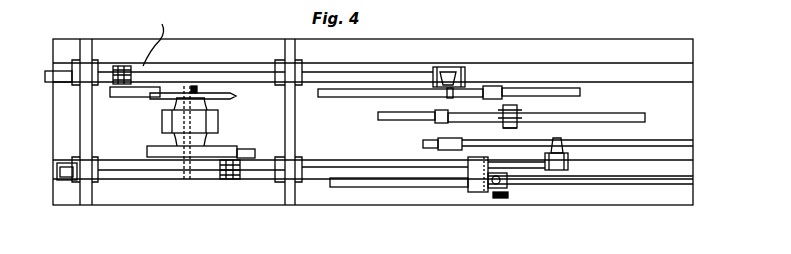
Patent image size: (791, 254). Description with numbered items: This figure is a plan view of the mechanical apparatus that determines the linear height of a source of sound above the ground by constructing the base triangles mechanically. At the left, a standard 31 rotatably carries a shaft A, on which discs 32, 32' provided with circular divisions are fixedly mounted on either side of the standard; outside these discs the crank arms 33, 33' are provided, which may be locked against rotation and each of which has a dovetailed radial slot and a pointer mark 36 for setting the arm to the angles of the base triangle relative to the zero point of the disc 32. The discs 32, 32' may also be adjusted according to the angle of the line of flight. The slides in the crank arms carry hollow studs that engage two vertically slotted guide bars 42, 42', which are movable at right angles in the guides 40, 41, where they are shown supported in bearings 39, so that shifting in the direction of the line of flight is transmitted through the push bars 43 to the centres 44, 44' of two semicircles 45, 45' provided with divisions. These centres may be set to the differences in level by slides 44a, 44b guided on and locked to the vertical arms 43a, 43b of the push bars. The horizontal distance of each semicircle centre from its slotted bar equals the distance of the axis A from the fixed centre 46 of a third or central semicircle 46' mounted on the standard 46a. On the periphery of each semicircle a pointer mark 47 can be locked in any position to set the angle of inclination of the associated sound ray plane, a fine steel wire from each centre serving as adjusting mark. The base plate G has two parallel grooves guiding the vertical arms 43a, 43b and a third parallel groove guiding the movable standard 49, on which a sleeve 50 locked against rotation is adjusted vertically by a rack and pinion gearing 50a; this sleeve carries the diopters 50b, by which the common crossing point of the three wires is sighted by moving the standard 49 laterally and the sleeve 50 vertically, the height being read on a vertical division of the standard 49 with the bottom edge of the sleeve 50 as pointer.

The guide 40 is at (88, 46).
The guide 41 is at (296, 130).
The bearing 39 is at (123, 66).
The guide bar 42' is at (161, 33).
The base plate G is at (201, 45).
The crank arm 33' is at (135, 106).
The disc 32' is at (206, 97).
The standard 31 is at (212, 125).
The crank arm 33 is at (209, 139).
The disc 32 is at (102, 160).
The shaft A is at (190, 160).
The guide bar 42 is at (209, 208).
The pointer mark 36 is at (244, 172).
The push bar 43 is at (310, 72).
The vertical arm 43b is at (440, 70).
The slide 44b is at (452, 85).
The centre 44' is at (499, 65).
The semicircle 45' is at (400, 103).
The pointer mark 47 is at (500, 92).
The central semicircle 46' is at (413, 111).
The semicircle 45 is at (557, 124).
The fixed centre 46 is at (525, 113).
The standard 46a is at (520, 120).
The diopters 50b is at (477, 190).
The sleeve 50 is at (506, 186).
The movable standard 49 is at (496, 200).
The rack and pinion gearing 50a is at (505, 197).
The slide 44a is at (570, 161).
The centre 44 is at (581, 137).
The vertical arm 43a is at (556, 170).